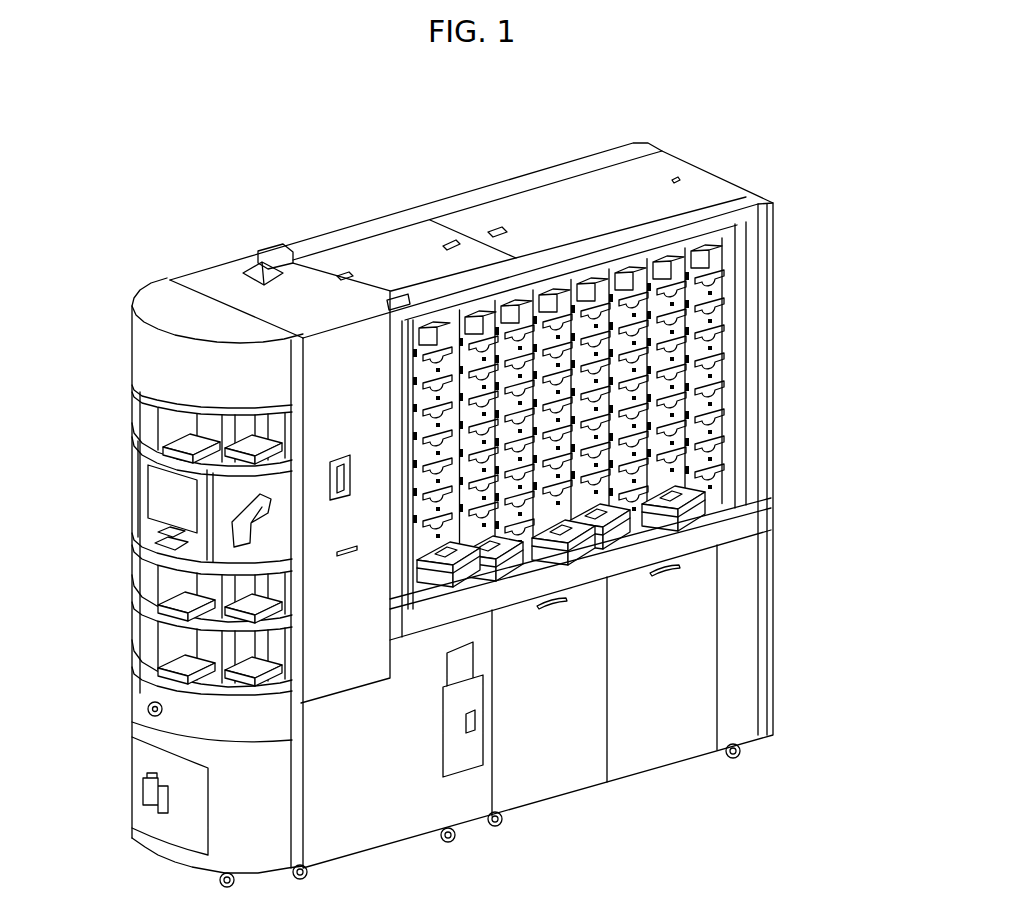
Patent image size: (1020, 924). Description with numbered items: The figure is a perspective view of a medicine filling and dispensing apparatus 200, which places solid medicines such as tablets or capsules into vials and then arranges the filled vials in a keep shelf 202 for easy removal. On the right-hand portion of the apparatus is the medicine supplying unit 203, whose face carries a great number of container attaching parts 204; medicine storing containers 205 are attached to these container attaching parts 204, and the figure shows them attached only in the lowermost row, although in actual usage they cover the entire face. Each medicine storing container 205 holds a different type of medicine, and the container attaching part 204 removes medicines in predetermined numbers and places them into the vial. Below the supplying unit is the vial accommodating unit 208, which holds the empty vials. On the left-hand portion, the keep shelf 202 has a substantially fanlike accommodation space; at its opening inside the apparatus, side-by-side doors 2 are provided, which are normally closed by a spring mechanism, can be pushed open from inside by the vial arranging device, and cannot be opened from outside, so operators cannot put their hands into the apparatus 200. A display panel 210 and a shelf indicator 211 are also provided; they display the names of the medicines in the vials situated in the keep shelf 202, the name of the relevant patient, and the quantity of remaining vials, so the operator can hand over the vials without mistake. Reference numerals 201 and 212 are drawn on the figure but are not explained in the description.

The medicine filling and dispensing apparatus 200 is at (255, 192).
The doors 2 is at (258, 427).
The first storage unit 201 is at (164, 552).
The keep shelf 202 is at (150, 563).
The medicine supplying unit 203 is at (656, 429).
The container attaching part 204 is at (796, 379).
The medicine storing container 205 is at (735, 502).
The vial accommodating unit 208 is at (697, 665).
The display panel 210 is at (165, 490).
The shelf indicator 211 is at (132, 597).
The hook 212 is at (723, 367).